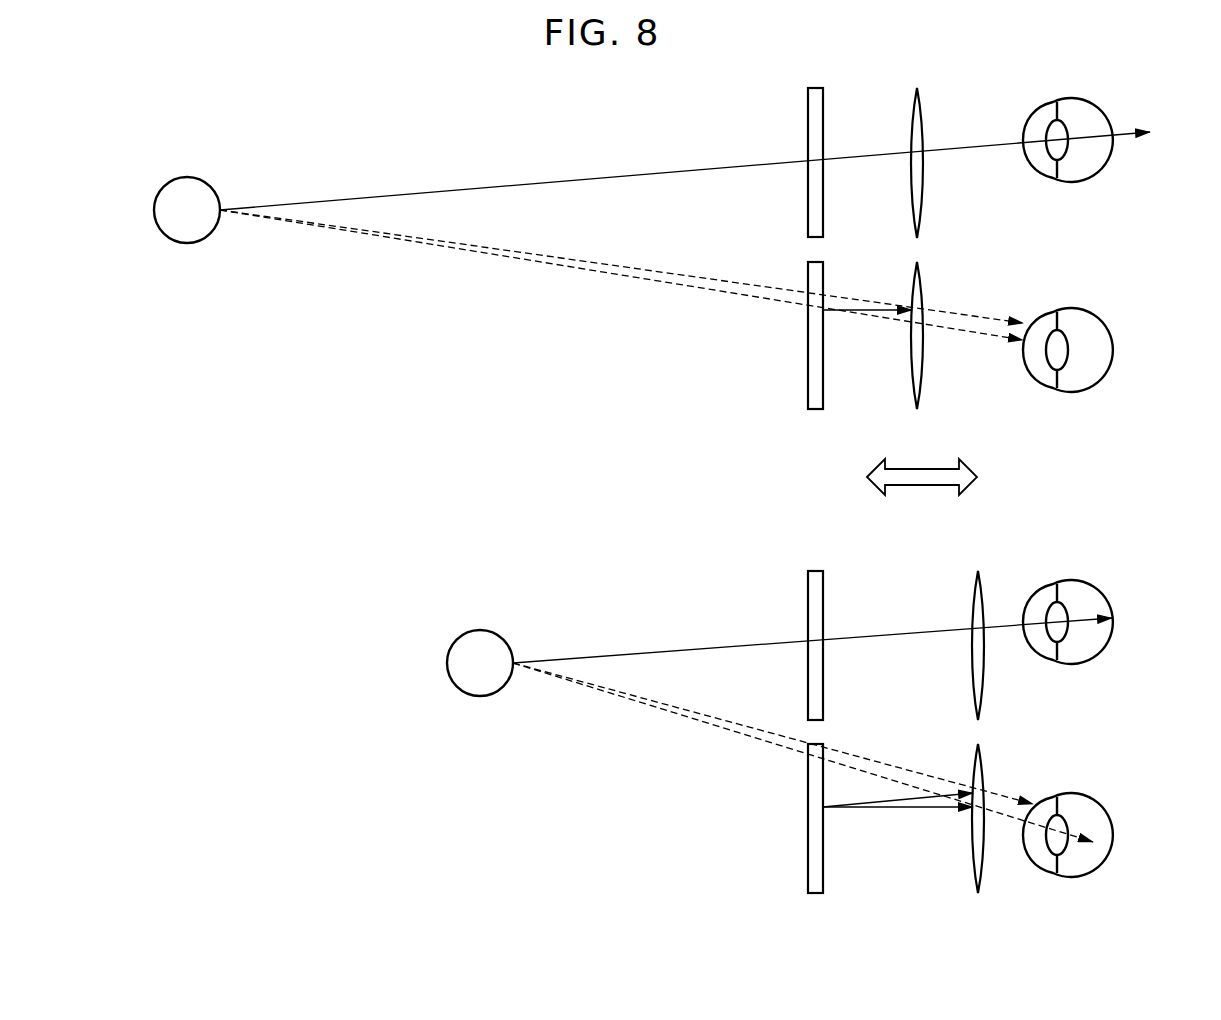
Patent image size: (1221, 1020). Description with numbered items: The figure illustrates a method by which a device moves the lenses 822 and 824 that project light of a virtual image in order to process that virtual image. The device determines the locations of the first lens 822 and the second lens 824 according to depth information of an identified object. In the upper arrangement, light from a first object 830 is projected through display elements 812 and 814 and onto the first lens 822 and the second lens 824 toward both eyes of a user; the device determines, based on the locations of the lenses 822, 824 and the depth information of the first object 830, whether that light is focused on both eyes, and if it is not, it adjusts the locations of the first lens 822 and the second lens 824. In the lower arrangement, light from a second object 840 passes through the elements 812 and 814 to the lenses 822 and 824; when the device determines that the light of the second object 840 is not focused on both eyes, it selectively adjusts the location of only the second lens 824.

The first display panel 812 is at (815, 88).
The second display panel 814 is at (808, 396).
The first lens 822 is at (917, 88).
The second lens 824 is at (912, 396).
The first object 830 is at (187, 177).
The second object 840 is at (480, 630).